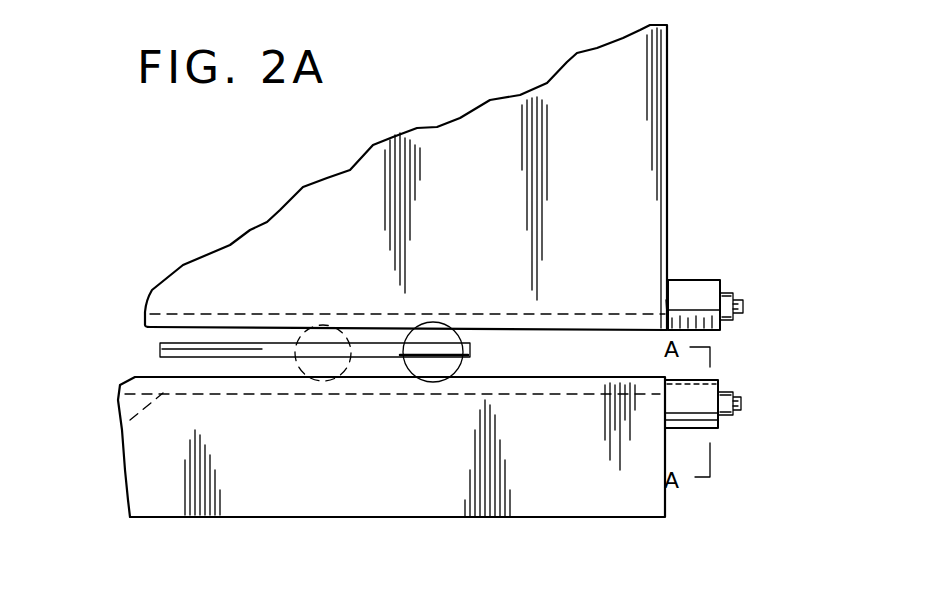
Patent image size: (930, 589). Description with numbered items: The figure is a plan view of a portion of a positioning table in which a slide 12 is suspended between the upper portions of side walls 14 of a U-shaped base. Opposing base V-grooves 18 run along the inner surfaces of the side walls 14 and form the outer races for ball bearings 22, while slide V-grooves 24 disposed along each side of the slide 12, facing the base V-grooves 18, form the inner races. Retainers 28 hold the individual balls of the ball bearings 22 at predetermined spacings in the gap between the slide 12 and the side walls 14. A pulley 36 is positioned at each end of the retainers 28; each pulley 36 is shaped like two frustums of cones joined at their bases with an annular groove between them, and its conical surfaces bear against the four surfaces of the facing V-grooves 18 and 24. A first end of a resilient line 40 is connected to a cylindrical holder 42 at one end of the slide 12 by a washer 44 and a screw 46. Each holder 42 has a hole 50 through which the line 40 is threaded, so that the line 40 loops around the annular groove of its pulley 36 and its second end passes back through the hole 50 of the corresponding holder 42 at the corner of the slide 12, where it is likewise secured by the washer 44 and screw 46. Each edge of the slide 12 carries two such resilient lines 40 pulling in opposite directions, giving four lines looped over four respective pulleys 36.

The slide 12 is at (519, 95).
The side walls 14 is at (475, 517).
The base V-grooves 18 is at (118, 430).
The ball bearings 22 is at (323, 325).
The slide V-grooves 24 is at (152, 290).
The retainers 28 is at (245, 355).
The pulley 36 is at (428, 372).
The resilient line 40 is at (750, 230).
The cylindrical holder 42 is at (688, 280).
The washer 44 is at (726, 392).
The screw 46 is at (742, 302).
The hole 50 is at (668, 305).